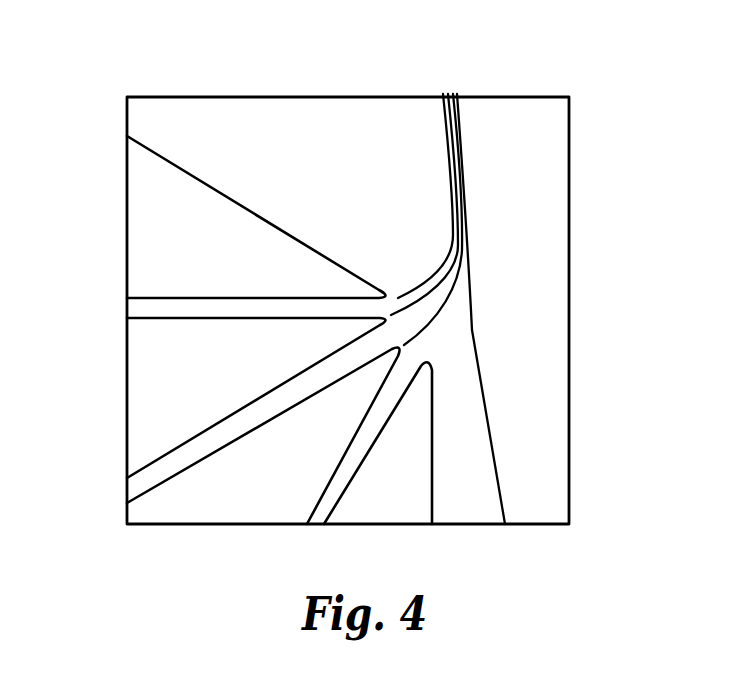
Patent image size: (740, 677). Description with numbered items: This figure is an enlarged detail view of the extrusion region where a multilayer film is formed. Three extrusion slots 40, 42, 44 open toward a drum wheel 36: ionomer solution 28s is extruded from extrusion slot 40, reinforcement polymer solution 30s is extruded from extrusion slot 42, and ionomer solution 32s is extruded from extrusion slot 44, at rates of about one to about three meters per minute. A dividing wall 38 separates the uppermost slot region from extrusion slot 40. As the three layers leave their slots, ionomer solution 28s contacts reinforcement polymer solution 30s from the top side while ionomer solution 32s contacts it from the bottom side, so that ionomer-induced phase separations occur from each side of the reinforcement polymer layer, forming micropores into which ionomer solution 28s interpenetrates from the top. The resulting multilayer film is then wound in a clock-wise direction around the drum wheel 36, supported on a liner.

The drum wheel 36 is at (542, 202).
The dividing wall 38 is at (203, 170).
The extrusion slot 40 is at (123, 307).
The extrusion slot 42 is at (123, 495).
The extrusion slot 44 is at (319, 529).
The ionomer solution 28s is at (411, 290).
The reinforcement polymer solution 30s is at (427, 312).
The ionomer solution 32s is at (437, 335).